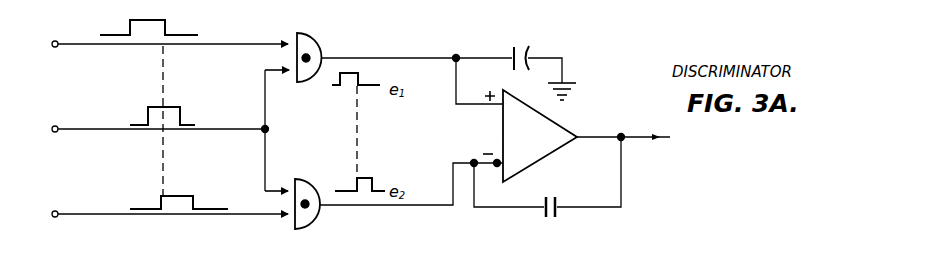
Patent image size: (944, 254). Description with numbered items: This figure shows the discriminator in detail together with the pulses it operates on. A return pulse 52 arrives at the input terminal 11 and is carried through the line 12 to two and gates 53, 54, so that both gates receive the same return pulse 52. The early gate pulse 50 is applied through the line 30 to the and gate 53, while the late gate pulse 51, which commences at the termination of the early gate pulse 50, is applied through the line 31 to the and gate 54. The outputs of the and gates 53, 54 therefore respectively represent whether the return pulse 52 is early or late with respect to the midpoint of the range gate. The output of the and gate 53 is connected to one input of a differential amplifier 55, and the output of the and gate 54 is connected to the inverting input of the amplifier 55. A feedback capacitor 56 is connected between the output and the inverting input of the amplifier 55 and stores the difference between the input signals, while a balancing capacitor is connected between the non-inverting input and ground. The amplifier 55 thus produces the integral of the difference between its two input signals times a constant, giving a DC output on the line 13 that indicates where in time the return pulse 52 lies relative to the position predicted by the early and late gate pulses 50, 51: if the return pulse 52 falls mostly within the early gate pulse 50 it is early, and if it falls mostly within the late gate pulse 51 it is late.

The line 30 is at (80, 43).
The early gate pulse 50 is at (157, 20).
The input terminal 11 is at (56, 125).
The line 12 is at (95, 126).
The return pulse 52 is at (152, 107).
The line 31 is at (81, 213).
The late gate pulse 51 is at (160, 197).
The and gate 53 is at (305, 85).
The and gate 54 is at (312, 173).
The differential amplifier 55 is at (565, 128).
The line 13 is at (631, 135).
The feedback capacitor 56 is at (560, 203).